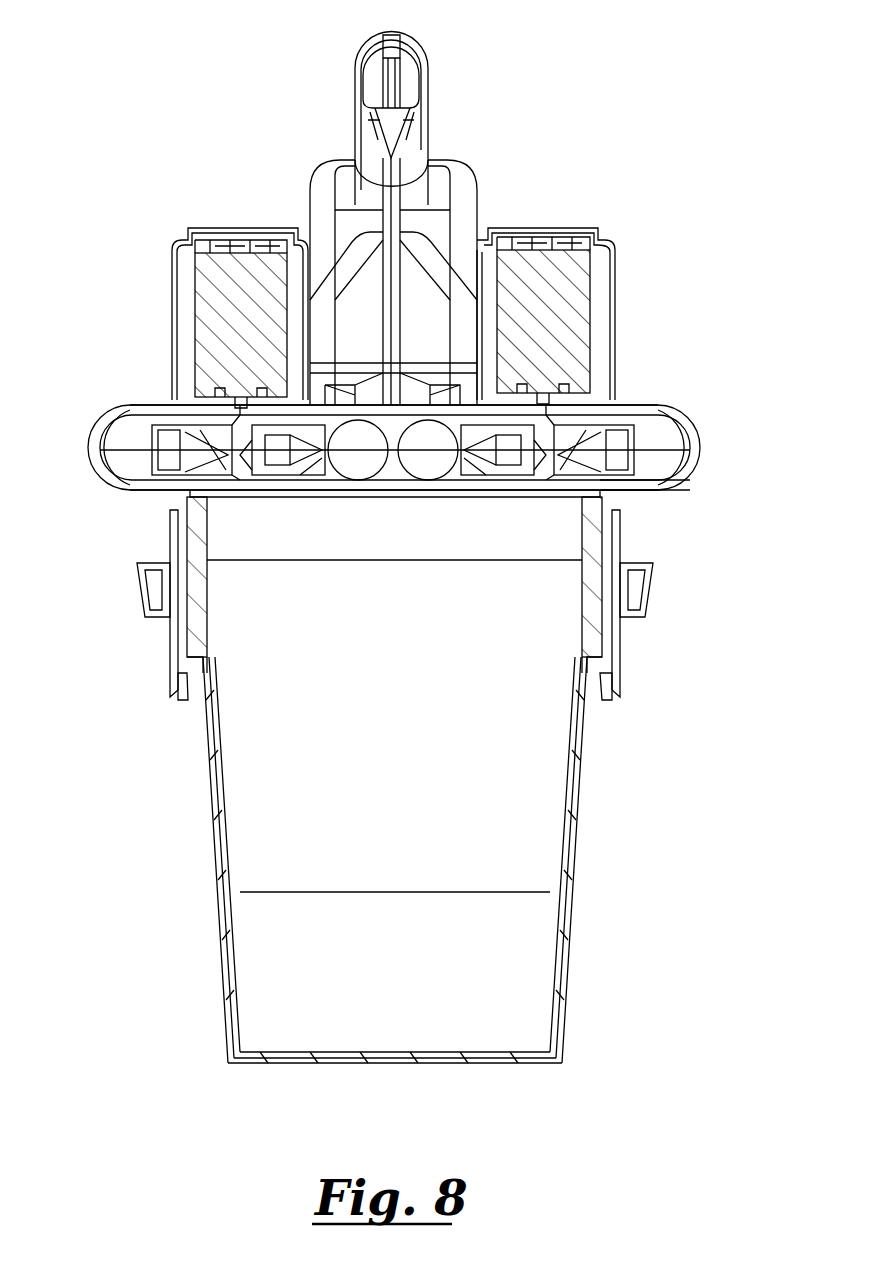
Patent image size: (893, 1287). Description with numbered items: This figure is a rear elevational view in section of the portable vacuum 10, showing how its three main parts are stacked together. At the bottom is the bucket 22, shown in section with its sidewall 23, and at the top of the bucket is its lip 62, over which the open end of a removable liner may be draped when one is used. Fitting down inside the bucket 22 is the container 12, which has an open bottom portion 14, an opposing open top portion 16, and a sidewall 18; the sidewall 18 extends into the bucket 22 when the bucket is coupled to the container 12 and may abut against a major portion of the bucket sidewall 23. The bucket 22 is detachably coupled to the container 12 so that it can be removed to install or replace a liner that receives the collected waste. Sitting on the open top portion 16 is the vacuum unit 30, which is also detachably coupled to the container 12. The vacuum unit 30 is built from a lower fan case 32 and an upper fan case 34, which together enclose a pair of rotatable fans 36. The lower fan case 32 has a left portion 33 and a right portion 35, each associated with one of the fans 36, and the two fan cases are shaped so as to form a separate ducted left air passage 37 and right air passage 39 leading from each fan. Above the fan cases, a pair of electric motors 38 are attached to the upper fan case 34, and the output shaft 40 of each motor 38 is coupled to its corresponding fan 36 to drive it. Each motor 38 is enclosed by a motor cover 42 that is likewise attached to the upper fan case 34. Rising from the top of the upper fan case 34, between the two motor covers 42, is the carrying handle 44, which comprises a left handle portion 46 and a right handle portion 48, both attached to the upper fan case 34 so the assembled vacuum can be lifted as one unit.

The portable vacuum 10 is at (688, 230).
The container 12 is at (643, 596).
The open bottom portion 14 is at (390, 893).
The open top portion 16 is at (210, 606).
The sidewall 18 is at (222, 760).
The bucket 22 is at (572, 944).
The sidewall of the bucket 23 is at (232, 946).
The vacuum unit 30 is at (86, 448).
The lower fan case 32 is at (690, 478).
The left portion 33 is at (92, 470).
The upper fan case 34 is at (668, 412).
The right portion 35 is at (650, 494).
The rotatable fans 36 is at (152, 463).
The left air passage 37 is at (130, 432).
The electric motors 38 is at (195, 340).
The right air passage 39 is at (668, 440).
The output shaft 40 is at (245, 400).
The motor cover 42 is at (174, 304).
The carrying handle 44 is at (434, 46).
The left handle portion 46 is at (428, 130).
The right handle portion 48 is at (358, 118).
The lip 62 is at (596, 660).